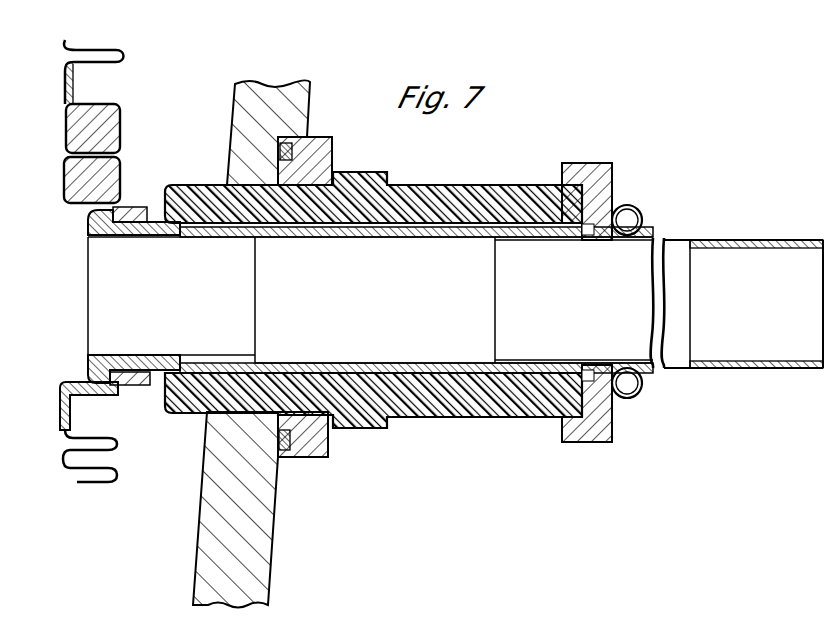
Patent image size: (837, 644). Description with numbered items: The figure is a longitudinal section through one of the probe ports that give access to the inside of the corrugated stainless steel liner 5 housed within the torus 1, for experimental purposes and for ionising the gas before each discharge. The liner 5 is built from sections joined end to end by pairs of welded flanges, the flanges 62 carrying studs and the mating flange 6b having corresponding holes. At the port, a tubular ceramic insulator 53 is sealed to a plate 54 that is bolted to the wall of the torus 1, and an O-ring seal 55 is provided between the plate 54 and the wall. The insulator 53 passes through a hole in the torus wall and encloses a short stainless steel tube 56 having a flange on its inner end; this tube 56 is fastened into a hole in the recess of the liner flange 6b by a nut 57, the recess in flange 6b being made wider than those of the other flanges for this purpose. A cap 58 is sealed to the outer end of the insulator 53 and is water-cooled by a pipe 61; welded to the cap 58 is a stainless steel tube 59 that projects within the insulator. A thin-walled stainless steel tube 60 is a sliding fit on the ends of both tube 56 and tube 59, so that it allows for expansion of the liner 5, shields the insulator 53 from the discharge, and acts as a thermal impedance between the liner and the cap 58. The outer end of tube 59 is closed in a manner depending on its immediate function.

The torus 1 is at (284, 97).
The cylindrical liner 5 is at (116, 50).
The flange 6b is at (112, 183).
The tubular ceramic insulator 53 is at (452, 205).
The plate 54 is at (318, 152).
The O-ring seal 55 is at (280, 438).
The short stainless steel tube 56 is at (118, 236).
The nut 57 is at (138, 207).
The cap 58 is at (583, 442).
The stainless steel tube 59 is at (683, 369).
The thin-walled stainless steel tube 60 is at (360, 238).
The pipe 61 is at (633, 208).
The flange 62 is at (114, 126).